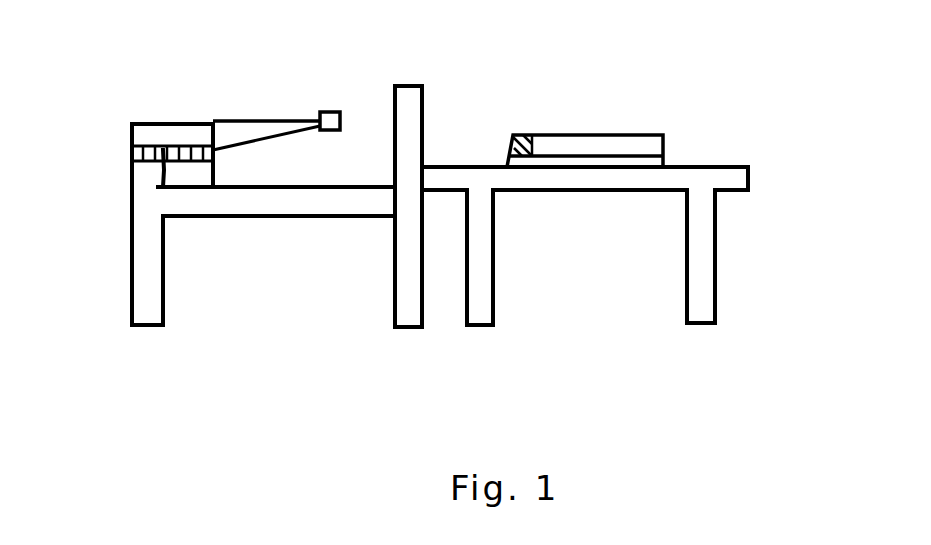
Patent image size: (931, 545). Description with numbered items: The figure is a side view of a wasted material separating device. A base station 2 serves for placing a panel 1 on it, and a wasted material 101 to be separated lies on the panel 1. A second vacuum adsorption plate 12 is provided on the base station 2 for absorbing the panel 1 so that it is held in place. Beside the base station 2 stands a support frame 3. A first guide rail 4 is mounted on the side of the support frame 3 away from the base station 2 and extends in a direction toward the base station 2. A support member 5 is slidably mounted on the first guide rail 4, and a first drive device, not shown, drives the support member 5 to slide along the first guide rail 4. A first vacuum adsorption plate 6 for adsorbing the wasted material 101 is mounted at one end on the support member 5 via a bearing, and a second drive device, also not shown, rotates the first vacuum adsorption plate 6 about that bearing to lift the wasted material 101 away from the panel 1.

The panel 1 is at (612, 135).
The wasted material 101 is at (510, 135).
The second vacuum adsorption plate 12 is at (650, 166).
The base station 2 is at (737, 167).
The support frame 3 is at (147, 222).
The first guide rail 4 is at (163, 150).
The support member 5 is at (240, 131).
The first vacuum adsorption plate 6 is at (333, 113).